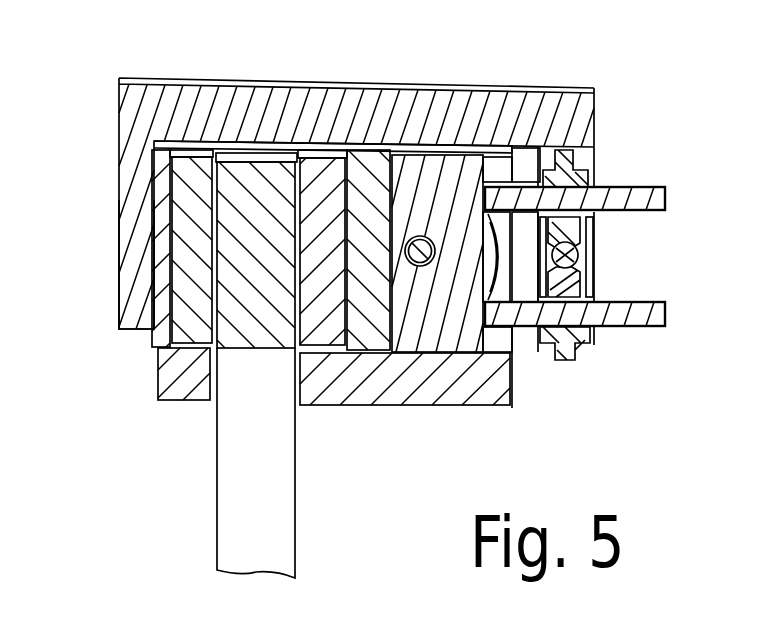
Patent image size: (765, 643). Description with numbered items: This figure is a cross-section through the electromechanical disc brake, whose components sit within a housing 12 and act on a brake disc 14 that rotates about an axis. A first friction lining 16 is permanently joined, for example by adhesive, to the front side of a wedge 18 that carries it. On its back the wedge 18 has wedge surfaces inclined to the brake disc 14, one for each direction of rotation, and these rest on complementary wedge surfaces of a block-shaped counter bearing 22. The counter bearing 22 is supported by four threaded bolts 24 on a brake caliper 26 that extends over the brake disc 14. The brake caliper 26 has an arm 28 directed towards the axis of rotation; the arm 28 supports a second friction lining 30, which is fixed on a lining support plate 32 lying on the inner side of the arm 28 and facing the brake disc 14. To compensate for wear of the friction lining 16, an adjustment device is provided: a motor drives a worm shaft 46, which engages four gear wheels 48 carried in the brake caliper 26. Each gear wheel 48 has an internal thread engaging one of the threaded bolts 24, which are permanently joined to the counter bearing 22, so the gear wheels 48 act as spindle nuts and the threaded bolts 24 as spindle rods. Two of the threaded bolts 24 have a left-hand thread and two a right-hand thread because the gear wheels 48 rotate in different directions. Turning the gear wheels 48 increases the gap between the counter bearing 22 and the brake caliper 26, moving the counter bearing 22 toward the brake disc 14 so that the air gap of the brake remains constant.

The housing 12 is at (167, 378).
The brake disc 14 is at (272, 520).
The first friction lining 16 is at (315, 325).
The wedge 18 is at (367, 335).
The counter bearing 22 is at (443, 325).
The threaded bolts 24 is at (633, 200).
The brake caliper 26 is at (300, 108).
The arm 28 is at (127, 270).
The second friction lining 30 is at (195, 300).
The lining support plate 32 is at (155, 328).
The worm shaft 46 is at (570, 257).
The gear wheels 48 is at (570, 175).